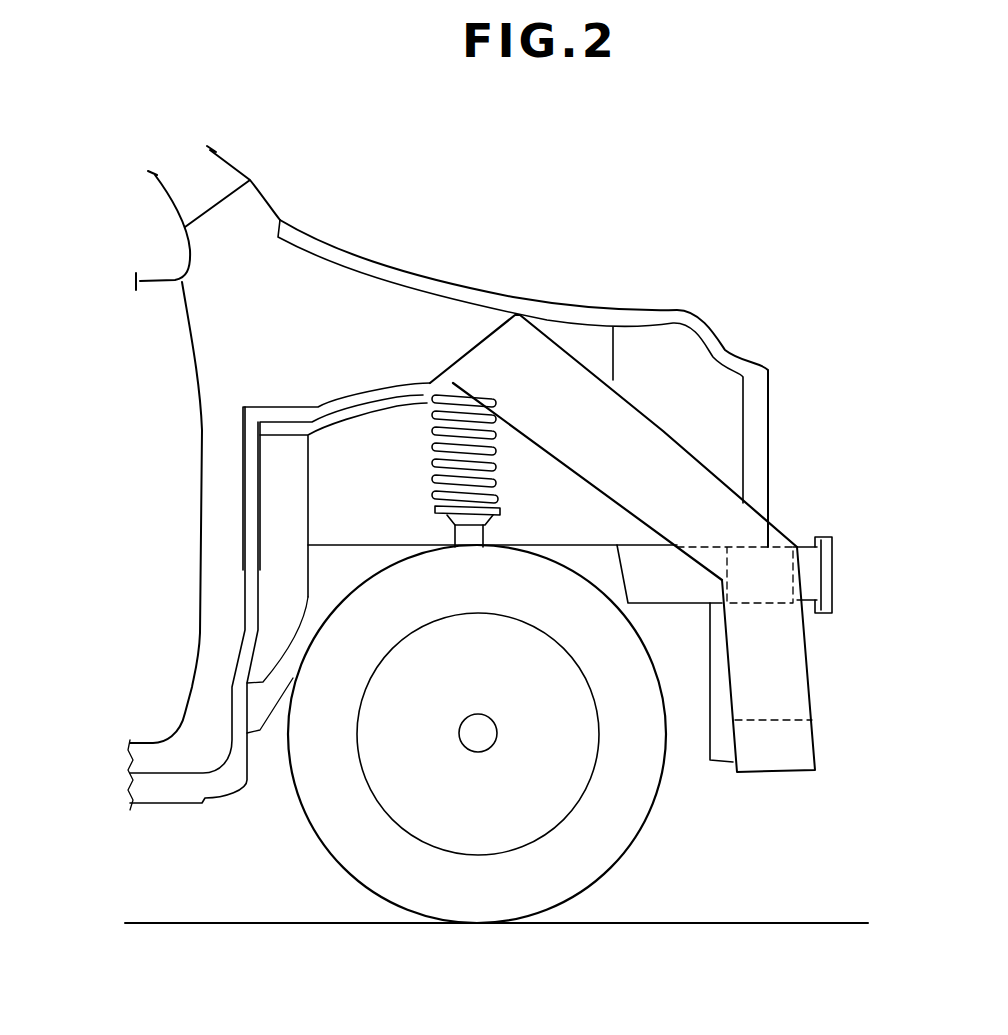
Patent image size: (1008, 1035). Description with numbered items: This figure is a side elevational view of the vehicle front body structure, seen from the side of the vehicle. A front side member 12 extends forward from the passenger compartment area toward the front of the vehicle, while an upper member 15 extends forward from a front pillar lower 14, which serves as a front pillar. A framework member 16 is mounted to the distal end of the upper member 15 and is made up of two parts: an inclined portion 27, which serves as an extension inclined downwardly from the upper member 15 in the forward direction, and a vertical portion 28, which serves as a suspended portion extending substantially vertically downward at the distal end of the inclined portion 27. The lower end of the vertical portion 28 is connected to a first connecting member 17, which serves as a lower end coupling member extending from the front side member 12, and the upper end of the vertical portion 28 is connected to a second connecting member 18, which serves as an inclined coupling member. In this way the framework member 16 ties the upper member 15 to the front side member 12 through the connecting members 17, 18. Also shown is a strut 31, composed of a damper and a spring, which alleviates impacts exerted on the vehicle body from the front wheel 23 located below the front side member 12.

The front side member 12 is at (377, 545).
The front pillar lower 14 is at (200, 633).
The upper member 15 is at (382, 267).
The framework member 16 is at (708, 426).
The first connecting member 17 is at (775, 720).
The second connecting member 18 is at (728, 567).
The front wheel 23 is at (643, 823).
The inclined portion 27 is at (622, 392).
The vertical portion 28 is at (810, 662).
The strut 31 is at (430, 463).